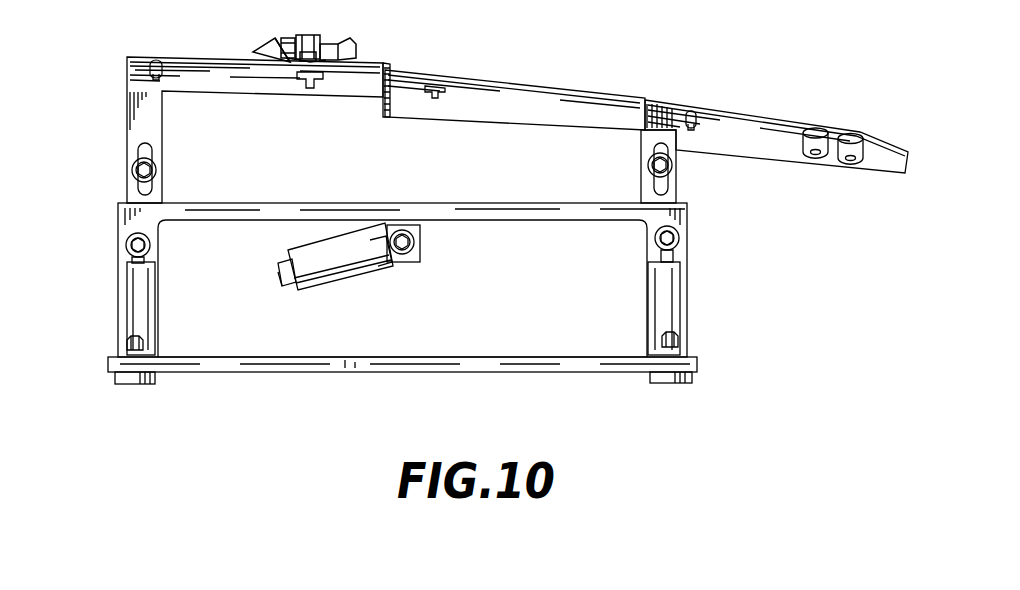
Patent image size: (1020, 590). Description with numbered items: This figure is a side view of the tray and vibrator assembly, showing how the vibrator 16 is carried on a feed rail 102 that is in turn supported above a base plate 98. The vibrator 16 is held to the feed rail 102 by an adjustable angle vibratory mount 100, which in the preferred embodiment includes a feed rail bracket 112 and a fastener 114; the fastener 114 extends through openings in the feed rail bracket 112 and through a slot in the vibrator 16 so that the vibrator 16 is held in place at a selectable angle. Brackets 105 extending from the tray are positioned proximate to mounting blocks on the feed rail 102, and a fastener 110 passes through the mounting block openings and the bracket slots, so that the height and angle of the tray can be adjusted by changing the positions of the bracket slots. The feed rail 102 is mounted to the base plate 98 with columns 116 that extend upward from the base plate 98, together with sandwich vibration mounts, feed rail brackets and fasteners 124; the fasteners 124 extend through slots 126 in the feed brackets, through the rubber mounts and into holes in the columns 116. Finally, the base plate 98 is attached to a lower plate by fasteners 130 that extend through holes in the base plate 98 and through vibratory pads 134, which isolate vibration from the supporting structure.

The vibrator 16 is at (338, 270).
The base plate 98 is at (571, 373).
The vibrator mount 100 is at (435, 250).
The feed rail 102 is at (447, 200).
The brackets 105 is at (673, 190).
The fastener 110 is at (156, 168).
The feed rail bracket 112 is at (412, 263).
The fastener 114 is at (422, 240).
The columns 116 is at (143, 318).
The fasteners 124 is at (128, 238).
The slots 126 is at (138, 262).
The fasteners 130 is at (125, 338).
The vibratory pads 134 is at (135, 385).